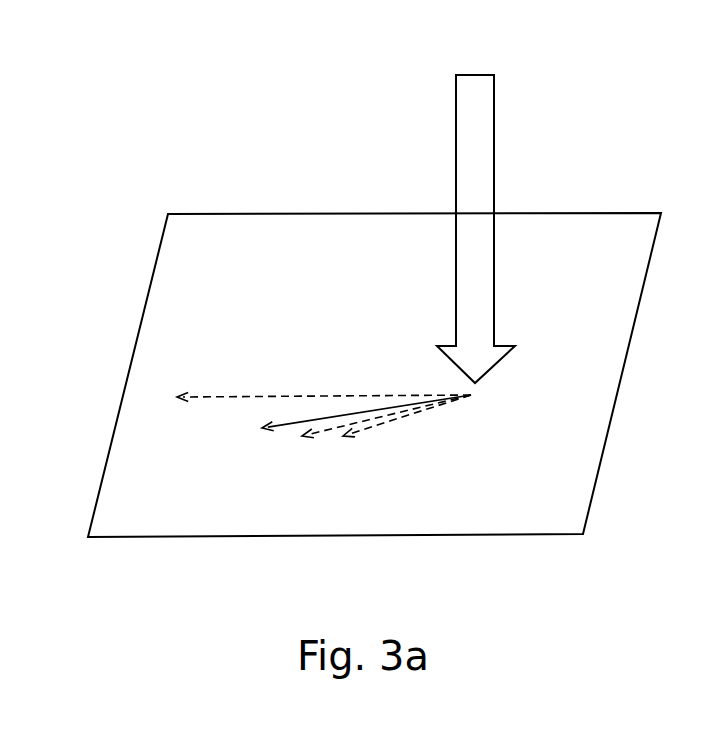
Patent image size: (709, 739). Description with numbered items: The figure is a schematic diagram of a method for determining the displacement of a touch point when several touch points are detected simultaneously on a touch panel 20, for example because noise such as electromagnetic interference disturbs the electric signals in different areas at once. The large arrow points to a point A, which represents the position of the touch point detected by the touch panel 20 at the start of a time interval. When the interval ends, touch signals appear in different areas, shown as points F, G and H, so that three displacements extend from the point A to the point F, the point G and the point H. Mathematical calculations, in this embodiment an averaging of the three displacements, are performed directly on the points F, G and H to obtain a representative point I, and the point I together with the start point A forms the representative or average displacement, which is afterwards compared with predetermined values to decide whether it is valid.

The touch panel 20 is at (237, 214).
The point A is at (492, 398).
The point G is at (313, 399).
The representative point I is at (356, 420).
The point F is at (377, 428).
The point H is at (397, 428).